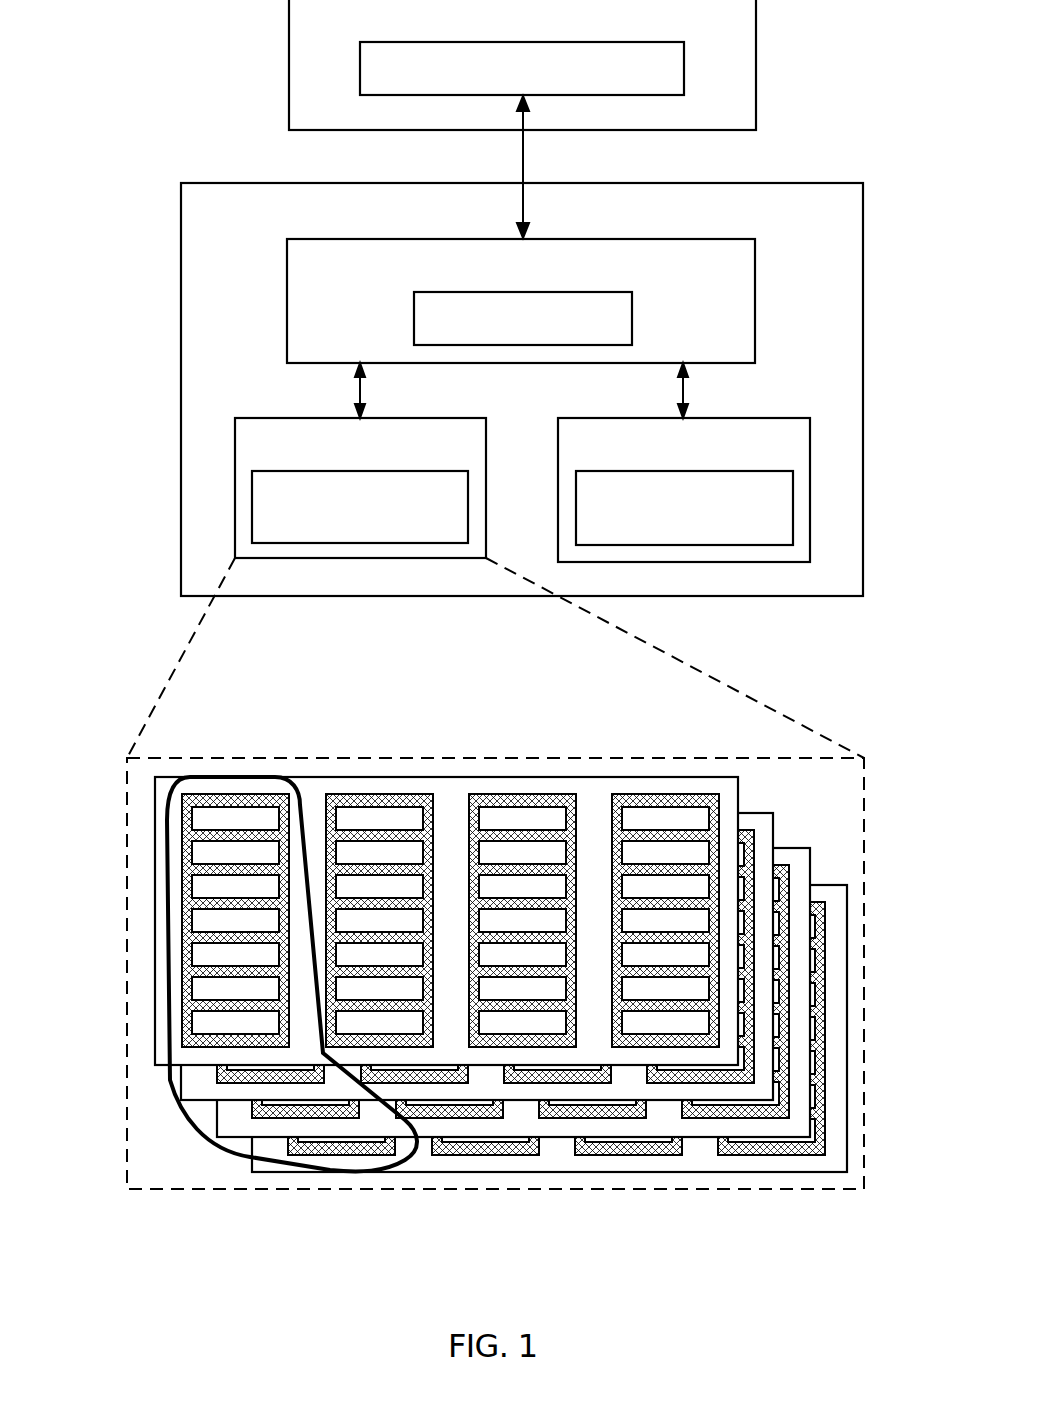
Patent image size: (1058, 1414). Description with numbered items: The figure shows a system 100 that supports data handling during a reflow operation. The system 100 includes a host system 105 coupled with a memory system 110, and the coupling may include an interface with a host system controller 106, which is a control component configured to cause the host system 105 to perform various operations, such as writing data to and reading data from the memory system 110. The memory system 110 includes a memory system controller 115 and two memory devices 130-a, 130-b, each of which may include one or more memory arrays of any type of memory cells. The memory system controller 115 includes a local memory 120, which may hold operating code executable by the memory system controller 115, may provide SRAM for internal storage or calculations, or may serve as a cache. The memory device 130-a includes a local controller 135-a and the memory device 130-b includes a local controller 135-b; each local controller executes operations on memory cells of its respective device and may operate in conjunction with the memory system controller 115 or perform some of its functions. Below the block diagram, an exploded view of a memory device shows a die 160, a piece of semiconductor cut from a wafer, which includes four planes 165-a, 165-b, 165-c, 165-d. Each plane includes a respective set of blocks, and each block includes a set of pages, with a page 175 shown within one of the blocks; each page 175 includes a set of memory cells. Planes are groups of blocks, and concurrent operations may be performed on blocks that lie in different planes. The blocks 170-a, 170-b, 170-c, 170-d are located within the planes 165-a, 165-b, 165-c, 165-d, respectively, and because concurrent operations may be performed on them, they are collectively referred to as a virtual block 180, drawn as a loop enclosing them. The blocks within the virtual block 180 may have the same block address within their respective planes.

The system 100 is at (782, 1293).
The host system 105 is at (460, 21).
The host system controller 106 is at (656, 81).
The memory system 110 is at (388, 219).
The memory system controller 115 is at (673, 272).
The local memory 120 is at (616, 331).
The memory device 130-a is at (468, 451).
The memory device 130-b is at (793, 452).
The local controller 135-a is at (386, 532).
The local controller 135-b is at (710, 534).
The die 160 is at (127, 797).
The plane 165-a is at (506, 906).
The plane 165-b is at (506, 956).
The plane 165-c is at (506, 992).
The plane 165-d is at (541, 1045).
The block 170-a is at (170, 920).
The block 170-b is at (215, 1072).
The block 170-c is at (252, 1107).
The block 170-d is at (288, 1143).
The page 175 is at (183, 955).
The virtual block 180 is at (300, 808).